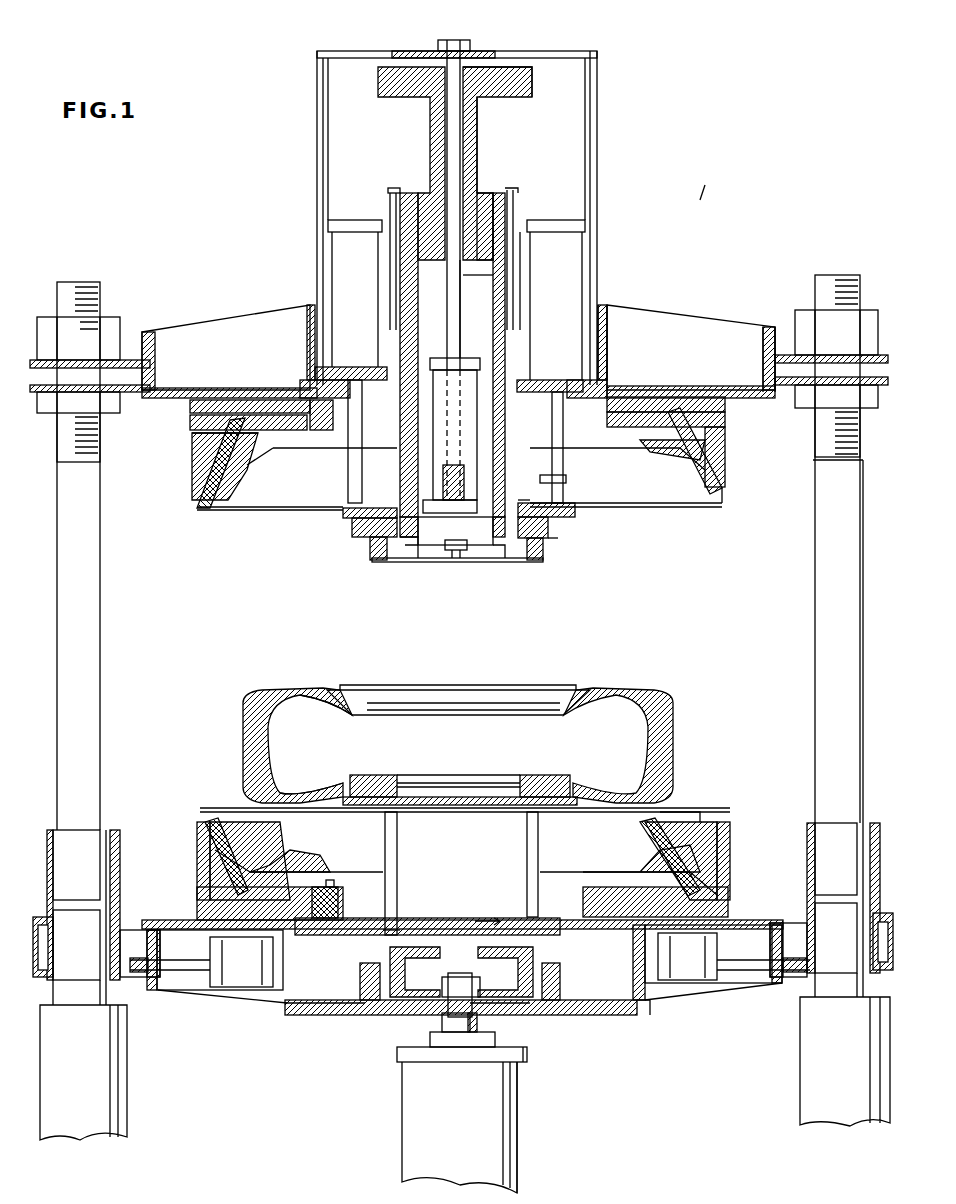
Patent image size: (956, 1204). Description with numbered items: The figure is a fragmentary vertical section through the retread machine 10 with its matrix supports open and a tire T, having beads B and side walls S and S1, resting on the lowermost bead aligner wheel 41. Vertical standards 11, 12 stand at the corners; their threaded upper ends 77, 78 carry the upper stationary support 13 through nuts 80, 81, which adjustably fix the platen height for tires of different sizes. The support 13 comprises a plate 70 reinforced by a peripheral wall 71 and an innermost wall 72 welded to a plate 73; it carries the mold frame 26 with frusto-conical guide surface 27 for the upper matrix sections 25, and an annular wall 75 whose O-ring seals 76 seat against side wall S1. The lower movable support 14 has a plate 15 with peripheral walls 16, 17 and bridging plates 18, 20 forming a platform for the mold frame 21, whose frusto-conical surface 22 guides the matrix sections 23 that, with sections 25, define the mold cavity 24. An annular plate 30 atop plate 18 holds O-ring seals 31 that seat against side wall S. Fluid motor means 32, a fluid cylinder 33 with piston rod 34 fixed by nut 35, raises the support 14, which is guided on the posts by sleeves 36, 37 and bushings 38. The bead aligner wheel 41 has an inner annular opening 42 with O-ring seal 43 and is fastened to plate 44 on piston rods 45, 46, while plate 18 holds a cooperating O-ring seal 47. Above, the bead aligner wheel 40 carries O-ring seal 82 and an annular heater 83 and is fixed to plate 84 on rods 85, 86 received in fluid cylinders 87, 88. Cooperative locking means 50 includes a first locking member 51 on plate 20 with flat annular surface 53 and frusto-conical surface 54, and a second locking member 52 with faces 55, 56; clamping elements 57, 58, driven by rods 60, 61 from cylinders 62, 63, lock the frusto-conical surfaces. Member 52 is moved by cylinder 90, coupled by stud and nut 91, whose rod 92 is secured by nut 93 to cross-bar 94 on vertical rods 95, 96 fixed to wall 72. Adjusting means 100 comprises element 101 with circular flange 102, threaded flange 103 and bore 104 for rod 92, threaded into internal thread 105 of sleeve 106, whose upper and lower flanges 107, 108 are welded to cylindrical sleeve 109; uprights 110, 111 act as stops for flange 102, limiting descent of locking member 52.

The retread machine 10 is at (716, 190).
The vertical standard 11 is at (127, 1072).
The vertical standard 12 is at (800, 1090).
The upper stationary support 13 is at (670, 320).
The lower movable support 14 is at (752, 979).
The plate 15 is at (750, 918).
The peripheral wall 16 is at (677, 1003).
The peripheral wall 17 is at (642, 1003).
The bridging plate 18 is at (583, 888).
The bridging plate 20 is at (600, 1017).
The mold frame 21 is at (732, 830).
The frusto-conical surface 22 is at (705, 812).
The matrix sections 23 is at (672, 808).
The mold cavity 24 is at (472, 880).
The matrix sections 25 is at (680, 505).
The mold frame 26 is at (728, 420).
The frusto-conical guide surface 27 is at (725, 468).
The annular plate 30 is at (340, 888).
The O-ring seal 31 is at (335, 870).
The fluid motor means 32 is at (520, 1158).
The fluid cylinder 33 is at (410, 1125).
The piston rod 34 is at (452, 1020).
The nut 35 is at (448, 995).
The sleeve 36 is at (122, 865).
The sleeve 37 is at (880, 840).
The bushings 38 is at (65, 862).
The bead aligner wheel 40 is at (562, 547).
The bead aligner wheel 41 is at (548, 770).
The inner annular opening 42 is at (410, 776).
The O-ring seal 43 is at (518, 778).
The plate 44 is at (560, 813).
The vertical post 45 is at (525, 845).
The vertical post 46 is at (398, 833).
The O-ring seal 47 is at (404, 919).
The cooperative locking means 50 is at (495, 563).
The first locking member 51 is at (517, 1017).
The second locking member 52 is at (435, 560).
The flat annular surface 53 is at (490, 922).
The frusto-conical surface 54 is at (352, 1017).
The face 55 is at (412, 560).
The face 56 is at (413, 543).
The clamping element 57 is at (395, 975).
The clamping element 58 is at (530, 940).
The rod 60 is at (235, 975).
The rod 61 is at (636, 1004).
The cylinder 62 is at (245, 1000).
The cylinder 63 is at (688, 967).
The plate 70 is at (668, 385).
The peripheral wall 71 is at (772, 328).
The innermost wall 72 is at (608, 312).
The plate 73 is at (620, 378).
The annular wall 75 is at (590, 450).
The O-ring seal 76 is at (322, 440).
The threaded upper end 77 is at (103, 443).
The threaded upper end 78 is at (860, 432).
The nut 80 is at (110, 320).
The nut 81 is at (45, 413).
The O-ring seal 82 is at (526, 502).
The annular heater 83 is at (525, 562).
The plate 84 is at (575, 520).
The rod 85 is at (343, 480).
The rod 86 is at (566, 480).
The fluid cylinder 87 is at (330, 235).
The fluid cylinder 88 is at (570, 258).
The cylinder 90 is at (442, 358).
The stud and nut 91 is at (458, 552).
The rod 92 is at (475, 276).
The nut 93 is at (462, 42).
The cross-bar 94 is at (530, 52).
The vertical rod 95 is at (320, 158).
The vertical rod 96 is at (598, 178).
The adjusting means 100 is at (496, 176).
The element 101 is at (478, 122).
The circular flange 102 is at (533, 78).
The threaded flange 103 is at (510, 195).
The bore 104 is at (432, 128).
The internal thread 105 is at (505, 290).
The sleeve 106 is at (462, 290).
The upper flange 107 is at (402, 194).
The lower flange 108 is at (362, 542).
The cylindrical sleeve 109 is at (520, 200).
The upright 110 is at (390, 192).
The upright 111 is at (528, 242).
The tire T is at (256, 683).
The beads B is at (367, 708).
The side wall S1 is at (305, 692).
The side wall S is at (307, 792).